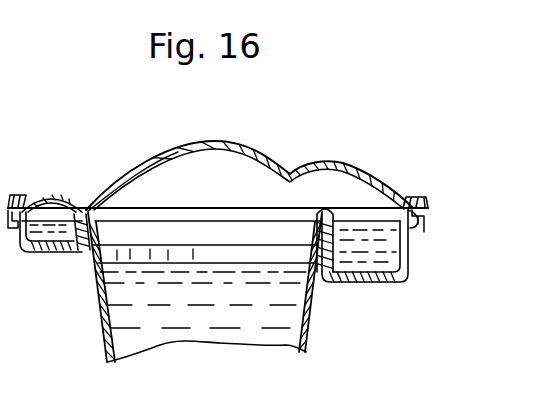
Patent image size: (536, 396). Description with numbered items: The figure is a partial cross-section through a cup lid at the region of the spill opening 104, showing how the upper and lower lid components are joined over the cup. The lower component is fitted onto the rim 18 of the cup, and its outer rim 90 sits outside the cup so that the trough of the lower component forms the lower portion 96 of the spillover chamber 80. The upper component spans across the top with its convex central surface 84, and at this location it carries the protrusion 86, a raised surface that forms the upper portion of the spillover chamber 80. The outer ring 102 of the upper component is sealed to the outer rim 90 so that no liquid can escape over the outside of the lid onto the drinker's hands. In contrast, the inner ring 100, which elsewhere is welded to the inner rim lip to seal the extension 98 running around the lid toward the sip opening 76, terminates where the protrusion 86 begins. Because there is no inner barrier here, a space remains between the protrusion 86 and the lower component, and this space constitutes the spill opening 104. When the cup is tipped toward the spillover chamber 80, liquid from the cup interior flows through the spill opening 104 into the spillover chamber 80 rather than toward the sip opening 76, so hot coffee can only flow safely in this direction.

The rim 18 is at (82, 252).
The sip opening 76 is at (60, 196).
The spillover chamber 80 is at (409, 270).
The central surface 84 is at (178, 146).
The protrusion 86 is at (356, 166).
The outer rim 90 is at (418, 226).
The lower portion 96 is at (358, 284).
The extension 98 is at (14, 256).
The inner ring 100 is at (91, 208).
The outer ring 102 is at (28, 200).
The spill opening 104 is at (328, 165).